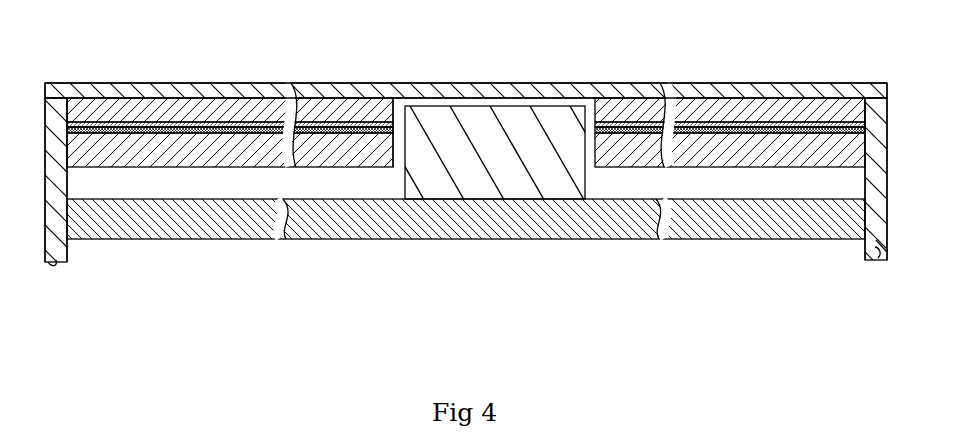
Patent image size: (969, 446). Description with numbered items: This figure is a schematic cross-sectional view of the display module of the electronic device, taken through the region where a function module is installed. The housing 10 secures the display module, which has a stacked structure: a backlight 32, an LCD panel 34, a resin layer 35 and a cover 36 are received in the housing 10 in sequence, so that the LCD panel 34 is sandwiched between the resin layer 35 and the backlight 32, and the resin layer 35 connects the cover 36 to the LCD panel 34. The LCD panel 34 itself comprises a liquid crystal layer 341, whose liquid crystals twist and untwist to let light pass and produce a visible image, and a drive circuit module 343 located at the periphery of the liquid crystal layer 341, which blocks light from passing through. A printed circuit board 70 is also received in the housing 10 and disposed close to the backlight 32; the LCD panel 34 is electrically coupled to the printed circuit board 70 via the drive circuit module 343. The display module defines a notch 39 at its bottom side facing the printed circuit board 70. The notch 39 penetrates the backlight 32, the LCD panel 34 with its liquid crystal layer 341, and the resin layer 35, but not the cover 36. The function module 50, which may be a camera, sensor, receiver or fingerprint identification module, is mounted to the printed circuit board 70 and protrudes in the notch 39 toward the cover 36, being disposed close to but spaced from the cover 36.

The housing 10 is at (53, 263).
The backlight 32 is at (187, 147).
The LCD panel 34 is at (466, 240).
The liquid crystal layer 341 is at (697, 124).
The drive circuit module 343 is at (818, 129).
The resin layer 35 is at (200, 101).
The cover 36 is at (129, 93).
The notch 39 is at (395, 142).
The function module 50 is at (497, 125).
The printed circuit board 70 is at (524, 239).